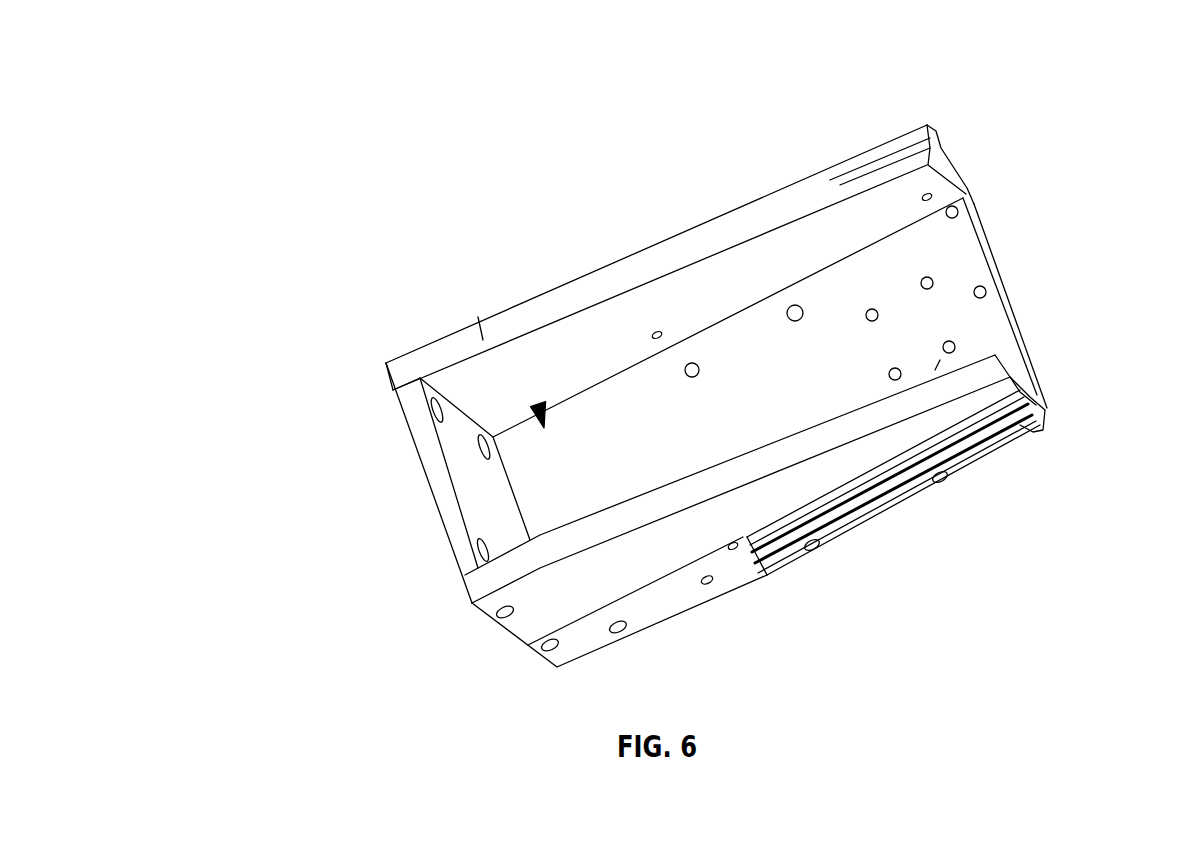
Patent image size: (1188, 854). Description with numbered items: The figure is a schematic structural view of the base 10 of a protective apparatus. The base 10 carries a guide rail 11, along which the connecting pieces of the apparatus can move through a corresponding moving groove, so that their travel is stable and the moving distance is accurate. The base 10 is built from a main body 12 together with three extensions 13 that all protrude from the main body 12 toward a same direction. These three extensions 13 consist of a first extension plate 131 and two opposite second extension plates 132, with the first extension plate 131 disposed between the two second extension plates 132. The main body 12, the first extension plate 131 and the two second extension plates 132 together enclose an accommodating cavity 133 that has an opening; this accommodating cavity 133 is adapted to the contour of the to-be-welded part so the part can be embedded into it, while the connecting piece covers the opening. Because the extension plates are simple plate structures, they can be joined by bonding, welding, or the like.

The base 10 is at (358, 115).
The guide rail 11 is at (1047, 440).
The main body 12 is at (957, 253).
The extensions 13 is at (282, 421).
The first extension plate 131 is at (417, 623).
The second extension plates 132 is at (748, 650).
The accommodating cavity 133 is at (538, 402).